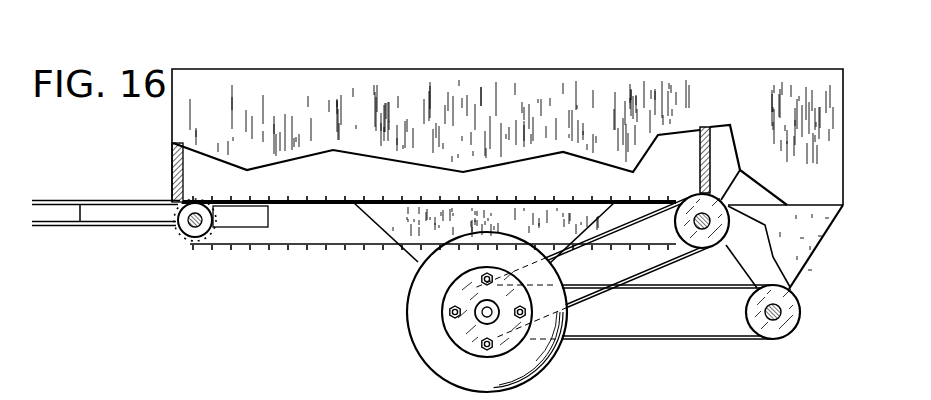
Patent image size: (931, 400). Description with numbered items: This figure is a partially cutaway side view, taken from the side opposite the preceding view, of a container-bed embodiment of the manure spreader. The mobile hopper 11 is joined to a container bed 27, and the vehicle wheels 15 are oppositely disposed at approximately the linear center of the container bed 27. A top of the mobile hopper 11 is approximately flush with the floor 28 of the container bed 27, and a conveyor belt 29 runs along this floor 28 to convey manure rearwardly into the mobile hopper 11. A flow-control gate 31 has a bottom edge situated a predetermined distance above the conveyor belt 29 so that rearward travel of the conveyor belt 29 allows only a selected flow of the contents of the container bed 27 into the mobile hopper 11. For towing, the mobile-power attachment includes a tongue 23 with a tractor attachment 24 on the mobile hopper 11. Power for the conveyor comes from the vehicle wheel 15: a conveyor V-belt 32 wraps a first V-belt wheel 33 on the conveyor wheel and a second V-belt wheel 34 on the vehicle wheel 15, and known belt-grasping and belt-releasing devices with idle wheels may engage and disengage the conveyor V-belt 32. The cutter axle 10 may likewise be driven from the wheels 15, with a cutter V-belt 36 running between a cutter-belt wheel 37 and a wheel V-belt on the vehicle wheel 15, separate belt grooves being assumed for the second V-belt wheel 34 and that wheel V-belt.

The cutter axle 10 is at (777, 316).
The mobile hopper 11 is at (817, 290).
The vehicle wheels 15 is at (548, 370).
The tongue 23 is at (119, 202).
The tractor attachment 24 is at (60, 202).
The container bed 27 is at (173, 66).
The floor 28 is at (313, 205).
The conveyor belt 29 is at (652, 201).
The flow-control gate 31 is at (700, 130).
The conveyor V-belt 32 is at (612, 228).
The first V-belt wheel 33 is at (722, 199).
The second V-belt wheel 34 is at (462, 300).
The cutter V-belt 36 is at (676, 339).
The cutter-belt wheel 37 is at (748, 333).